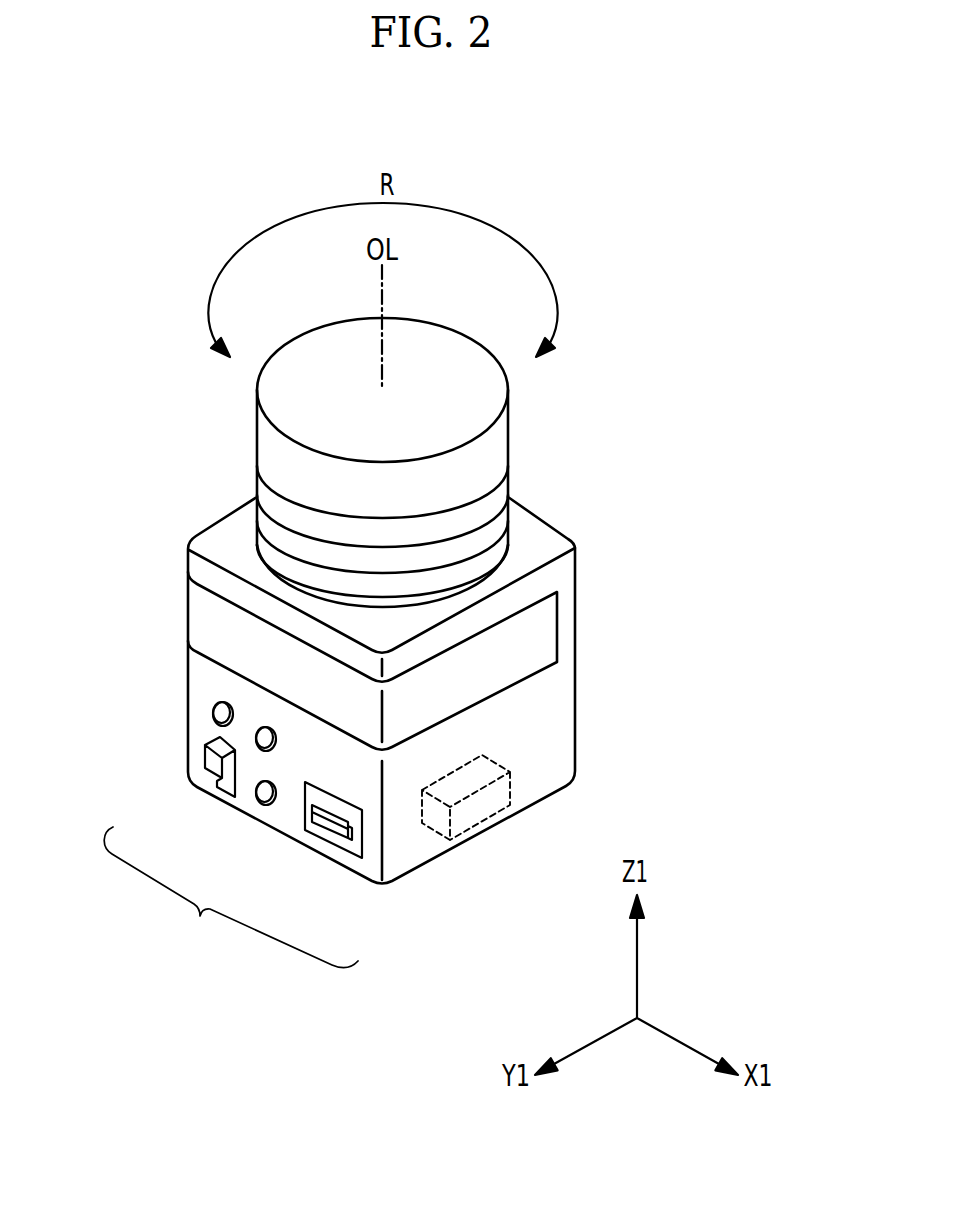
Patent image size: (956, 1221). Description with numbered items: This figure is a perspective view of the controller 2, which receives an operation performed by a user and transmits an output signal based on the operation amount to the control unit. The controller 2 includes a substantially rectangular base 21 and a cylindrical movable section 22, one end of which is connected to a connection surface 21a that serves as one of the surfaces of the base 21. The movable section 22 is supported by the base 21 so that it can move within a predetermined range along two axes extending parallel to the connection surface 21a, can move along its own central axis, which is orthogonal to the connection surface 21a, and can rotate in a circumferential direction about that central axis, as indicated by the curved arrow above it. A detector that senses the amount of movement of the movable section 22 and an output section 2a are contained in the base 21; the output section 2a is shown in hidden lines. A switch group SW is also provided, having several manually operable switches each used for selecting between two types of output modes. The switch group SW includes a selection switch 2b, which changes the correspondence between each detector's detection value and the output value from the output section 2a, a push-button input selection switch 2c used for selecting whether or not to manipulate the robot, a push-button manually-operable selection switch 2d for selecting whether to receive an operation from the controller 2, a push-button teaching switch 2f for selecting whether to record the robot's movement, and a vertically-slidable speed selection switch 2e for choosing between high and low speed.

The controller 2 is at (595, 336).
The output section 2a is at (498, 764).
The selection switch 2b is at (340, 826).
The input selection switch 2c is at (215, 719).
The manually-operable selection switch 2d is at (268, 741).
The speed selection switch 2e is at (211, 762).
The teaching switch 2f is at (260, 795).
The base 21 is at (576, 655).
The connection surface 21a is at (243, 531).
The movable section 22 is at (257, 425).
The switch group SW is at (231, 897).